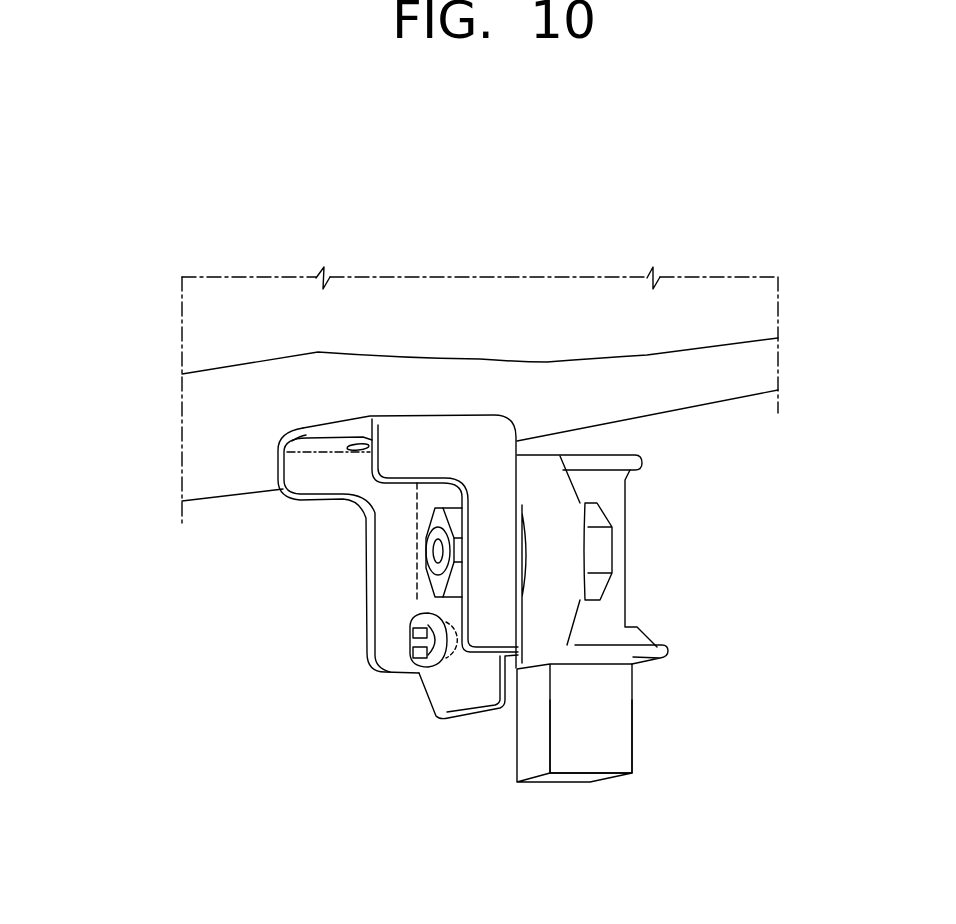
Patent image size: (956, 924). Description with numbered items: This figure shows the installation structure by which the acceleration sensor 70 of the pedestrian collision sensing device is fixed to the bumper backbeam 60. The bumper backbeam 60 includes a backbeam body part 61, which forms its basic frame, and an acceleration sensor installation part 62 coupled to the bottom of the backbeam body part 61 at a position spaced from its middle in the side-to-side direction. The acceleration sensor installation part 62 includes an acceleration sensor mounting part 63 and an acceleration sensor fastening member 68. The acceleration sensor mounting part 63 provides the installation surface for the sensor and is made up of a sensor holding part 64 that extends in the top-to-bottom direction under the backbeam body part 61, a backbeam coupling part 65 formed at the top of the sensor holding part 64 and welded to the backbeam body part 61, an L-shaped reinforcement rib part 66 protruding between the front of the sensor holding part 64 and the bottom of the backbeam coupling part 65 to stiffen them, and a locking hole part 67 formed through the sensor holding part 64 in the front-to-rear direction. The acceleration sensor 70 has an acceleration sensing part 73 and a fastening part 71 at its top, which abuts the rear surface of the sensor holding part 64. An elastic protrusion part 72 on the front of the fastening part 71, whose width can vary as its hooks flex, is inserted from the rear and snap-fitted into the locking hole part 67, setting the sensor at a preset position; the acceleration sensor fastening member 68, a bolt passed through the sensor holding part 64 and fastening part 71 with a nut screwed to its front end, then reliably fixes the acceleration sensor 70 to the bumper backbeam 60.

The bumper backbeam 60 is at (722, 408).
The backbeam body part 61 is at (583, 305).
The acceleration sensor installation part 62 is at (282, 589).
The acceleration sensor mounting part 63 is at (282, 559).
The sensor holding part 64 is at (457, 603).
The backbeam coupling part 65 is at (337, 443).
The reinforcement rib part 66 is at (420, 460).
The locking hole part 67 is at (415, 633).
The acceleration sensor fastening member 68 is at (433, 551).
The acceleration sensor 70 is at (645, 732).
The fastening part 71 is at (560, 557).
The elastic protrusion part 72 is at (413, 643).
The acceleration sensing part 73 is at (582, 738).